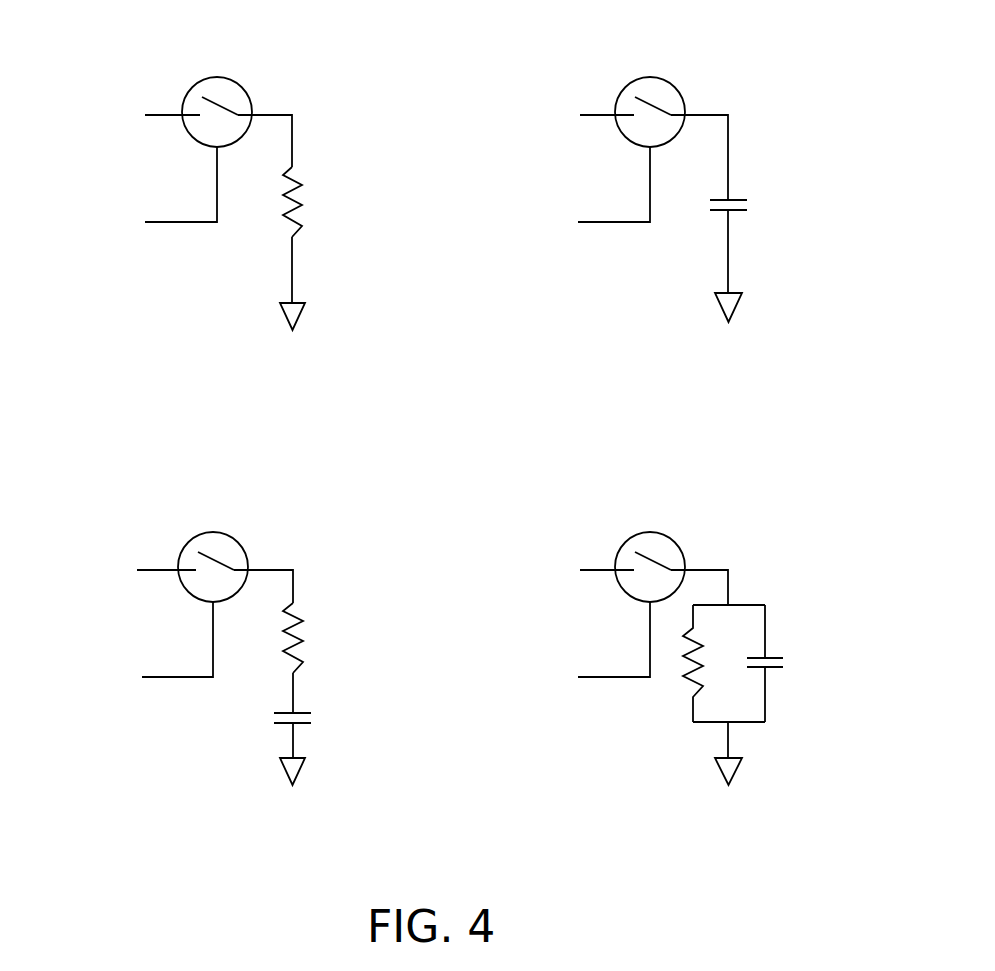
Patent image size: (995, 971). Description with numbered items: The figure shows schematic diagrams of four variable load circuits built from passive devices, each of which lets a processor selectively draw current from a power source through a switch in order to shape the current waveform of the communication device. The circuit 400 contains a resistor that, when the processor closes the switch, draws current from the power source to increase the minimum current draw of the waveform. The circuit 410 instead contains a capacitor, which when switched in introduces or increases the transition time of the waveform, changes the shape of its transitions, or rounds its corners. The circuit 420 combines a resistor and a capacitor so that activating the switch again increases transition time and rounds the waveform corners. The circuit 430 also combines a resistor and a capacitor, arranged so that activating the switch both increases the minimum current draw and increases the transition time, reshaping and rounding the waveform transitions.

The variable load circuit 400 is at (228, 34).
The variable load circuit 410 is at (665, 34).
The variable load circuit 420 is at (228, 489).
The variable load circuit 430 is at (665, 489).